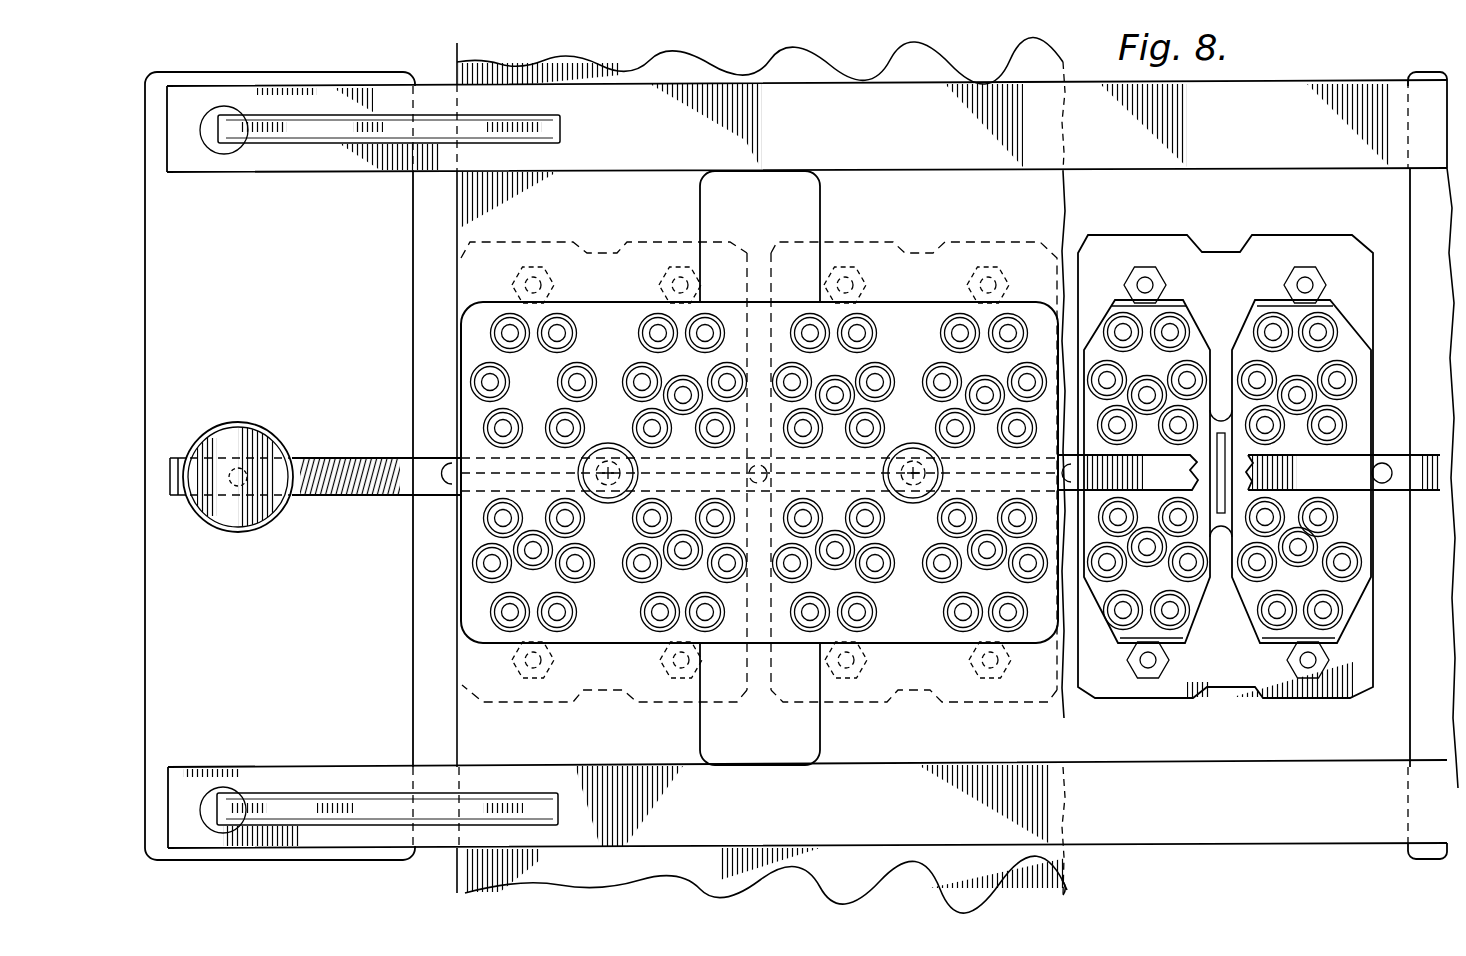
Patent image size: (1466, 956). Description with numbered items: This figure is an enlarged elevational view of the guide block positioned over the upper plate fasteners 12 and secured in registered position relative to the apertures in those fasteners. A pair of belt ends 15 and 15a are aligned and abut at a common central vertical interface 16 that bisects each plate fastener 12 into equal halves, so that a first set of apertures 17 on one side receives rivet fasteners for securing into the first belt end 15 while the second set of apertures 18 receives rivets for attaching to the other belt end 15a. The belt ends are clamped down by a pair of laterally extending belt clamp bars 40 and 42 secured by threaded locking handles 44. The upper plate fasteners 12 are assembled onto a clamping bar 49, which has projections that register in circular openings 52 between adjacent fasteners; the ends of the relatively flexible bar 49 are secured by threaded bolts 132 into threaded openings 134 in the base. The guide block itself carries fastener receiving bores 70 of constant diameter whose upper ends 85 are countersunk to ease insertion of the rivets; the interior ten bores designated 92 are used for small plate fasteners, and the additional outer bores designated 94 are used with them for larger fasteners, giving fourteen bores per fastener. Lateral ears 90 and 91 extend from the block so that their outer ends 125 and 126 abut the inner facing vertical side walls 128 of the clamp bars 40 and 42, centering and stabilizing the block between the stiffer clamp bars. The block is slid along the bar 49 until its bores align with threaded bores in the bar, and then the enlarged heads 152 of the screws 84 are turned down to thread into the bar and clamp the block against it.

The upper plate fastener 12 is at (1245, 336).
The first belt end 15 is at (1066, 210).
The second belt end 15a is at (1070, 876).
The central vertical interface 16 is at (493, 476).
The first set of apertures 17 is at (560, 330).
The second set of apertures 18 is at (575, 615).
The belt clamp bar 40 is at (631, 145).
The belt clamp bar 42 is at (697, 820).
The threaded locking handle 44 is at (316, 147).
The clamping bar 49 is at (332, 458).
The circular opening 52 is at (1205, 462).
The fastener receiving bore 70 is at (580, 381).
The threaded fastener 84 is at (618, 428).
The upper end of bore 85 is at (662, 438).
The lateral ear 90 is at (802, 198).
The lateral ear 91 is at (805, 732).
The interior bores 92 is at (842, 384).
The outer bores 94 is at (1000, 630).
The outer end of ear 125 is at (818, 135).
The outer end of ear 126 is at (778, 765).
The inner facing vertical side wall 128 is at (918, 176).
The threaded bolt 132 is at (250, 440).
The threaded opening 134 is at (233, 440).
The enlarged head 152 is at (606, 503).